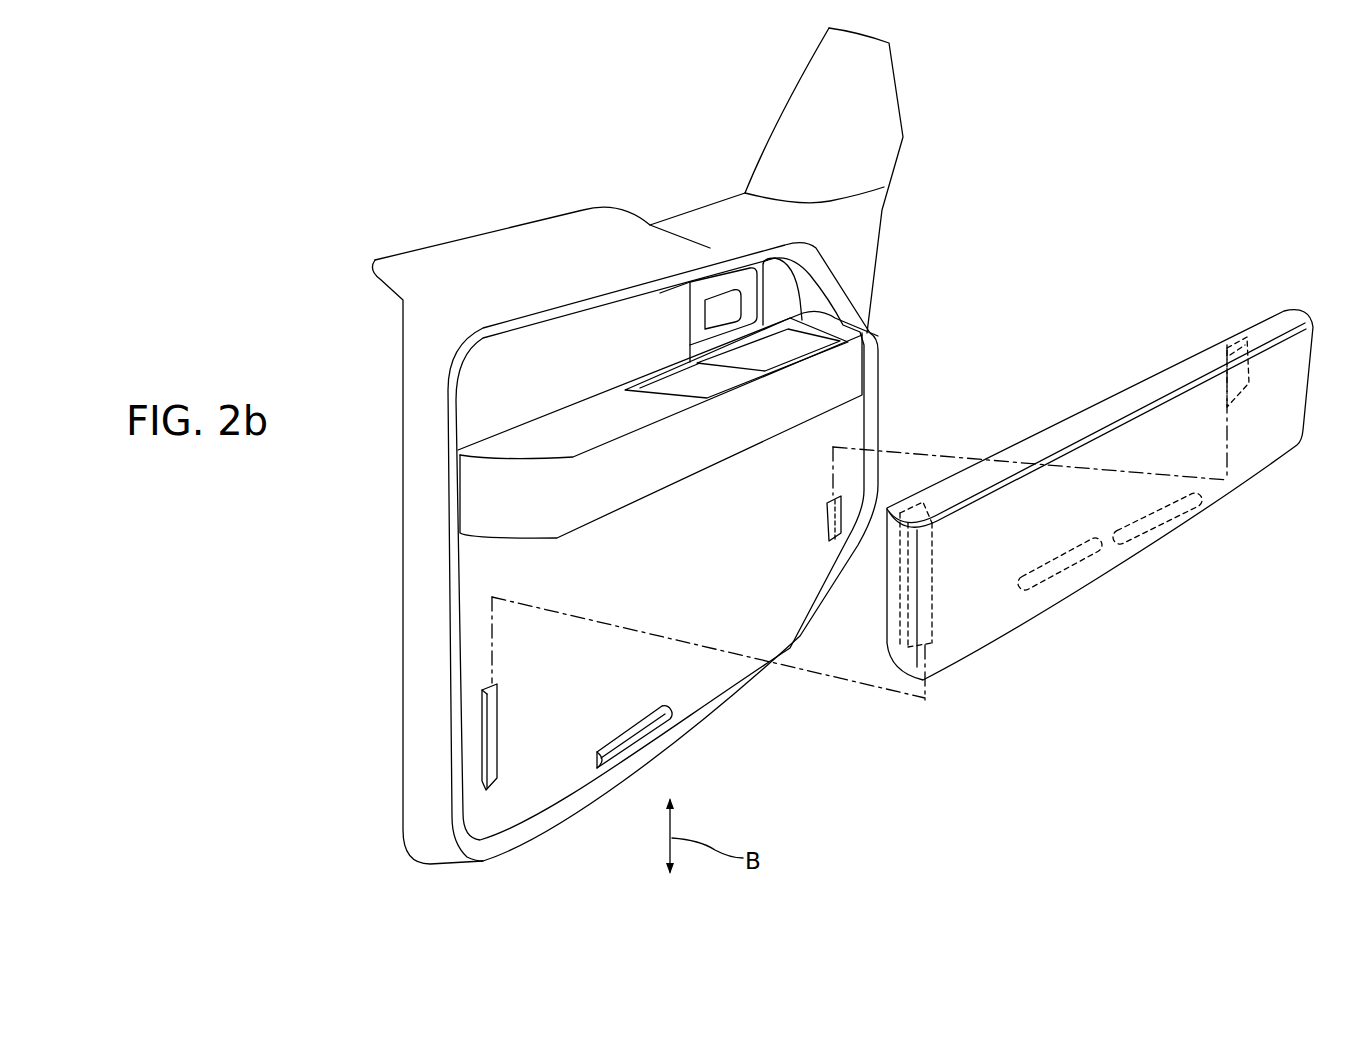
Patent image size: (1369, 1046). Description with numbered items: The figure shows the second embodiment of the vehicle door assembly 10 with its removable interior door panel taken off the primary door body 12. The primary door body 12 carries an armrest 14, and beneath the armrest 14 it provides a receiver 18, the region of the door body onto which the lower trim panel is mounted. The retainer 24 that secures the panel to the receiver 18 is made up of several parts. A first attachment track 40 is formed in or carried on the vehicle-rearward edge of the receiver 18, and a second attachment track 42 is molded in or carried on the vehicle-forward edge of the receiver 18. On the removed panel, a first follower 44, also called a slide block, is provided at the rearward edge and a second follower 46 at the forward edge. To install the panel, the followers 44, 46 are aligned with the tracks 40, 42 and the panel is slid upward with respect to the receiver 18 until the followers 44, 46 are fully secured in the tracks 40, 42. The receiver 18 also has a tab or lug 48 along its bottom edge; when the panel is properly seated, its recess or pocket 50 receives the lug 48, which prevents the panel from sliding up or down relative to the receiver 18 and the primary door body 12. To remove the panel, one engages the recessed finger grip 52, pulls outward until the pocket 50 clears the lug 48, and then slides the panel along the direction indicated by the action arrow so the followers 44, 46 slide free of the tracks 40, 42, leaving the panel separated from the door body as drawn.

The vehicle door assembly 10 is at (1097, 147).
The primary door body 12 is at (420, 353).
The armrest 14 is at (480, 503).
The receiver 18 is at (553, 748).
The retainer 24 is at (463, 703).
The first attachment track 40 is at (485, 740).
The second attachment track 42 is at (830, 526).
The first follower 44 is at (927, 580).
The second follower 46 is at (1247, 385).
The lug 48 is at (647, 733).
The pocket 50 is at (1062, 572).
The recessed finger grip 52 is at (1163, 513).